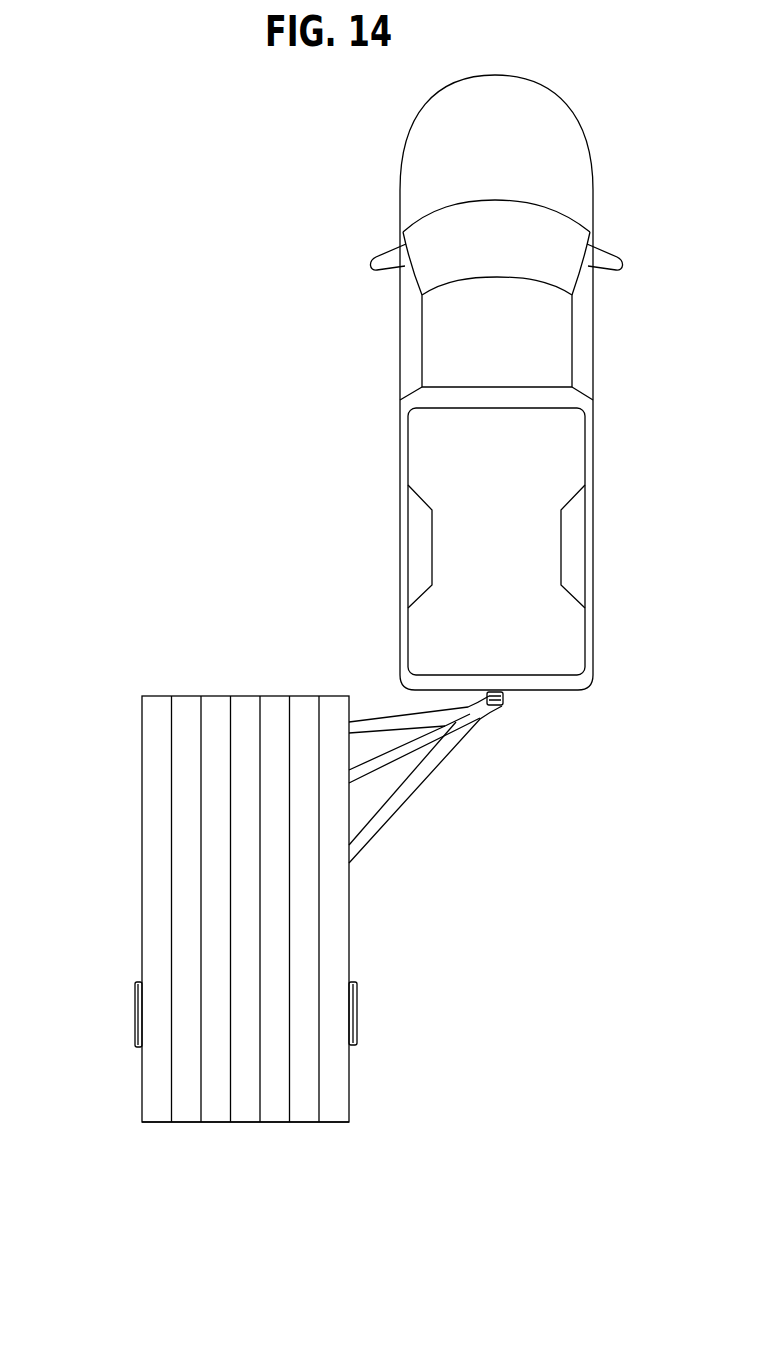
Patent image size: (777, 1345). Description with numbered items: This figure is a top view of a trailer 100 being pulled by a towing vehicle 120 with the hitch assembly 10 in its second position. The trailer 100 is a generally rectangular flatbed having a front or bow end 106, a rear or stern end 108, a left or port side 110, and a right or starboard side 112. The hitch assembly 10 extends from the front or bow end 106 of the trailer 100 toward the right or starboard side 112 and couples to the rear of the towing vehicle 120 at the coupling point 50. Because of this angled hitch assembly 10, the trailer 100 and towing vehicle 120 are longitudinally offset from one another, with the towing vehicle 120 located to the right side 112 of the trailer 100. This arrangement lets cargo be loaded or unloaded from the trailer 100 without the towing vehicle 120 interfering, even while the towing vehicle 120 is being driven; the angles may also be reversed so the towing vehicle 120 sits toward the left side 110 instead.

The towing vehicle 120 is at (328, 203).
The hitch ball coupler 50 is at (505, 705).
The hitch assembly 10 is at (438, 784).
The trailer 100 is at (224, 908).
The front or bow end 106 is at (213, 700).
The left or port side 110 is at (155, 963).
The right or starboard side 112 is at (338, 893).
The rear or stern end 108 is at (243, 1115).